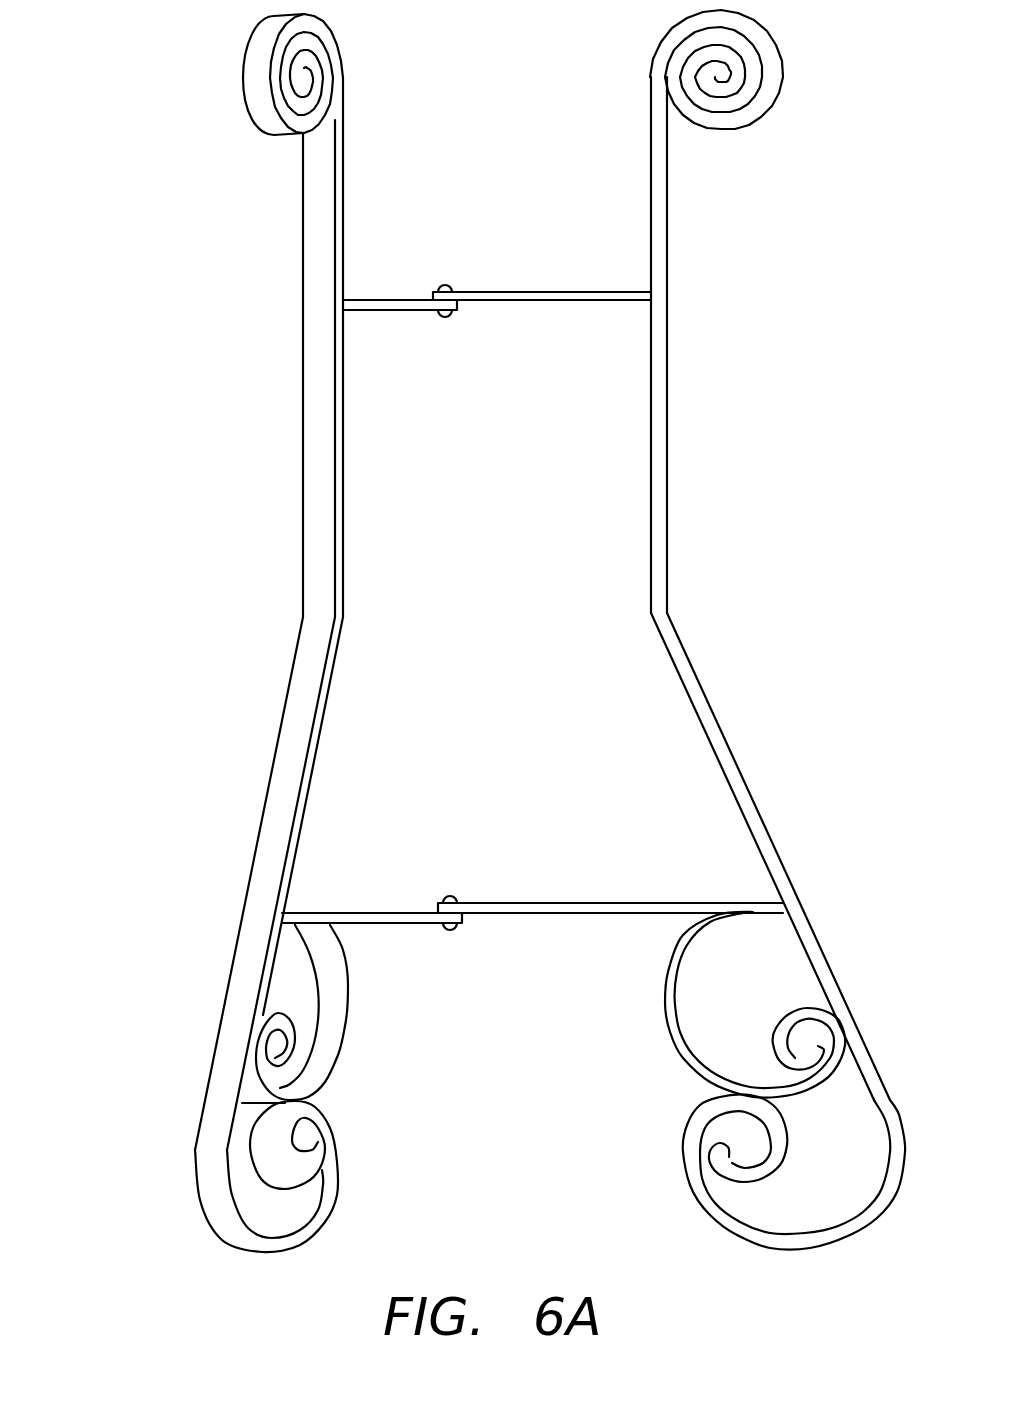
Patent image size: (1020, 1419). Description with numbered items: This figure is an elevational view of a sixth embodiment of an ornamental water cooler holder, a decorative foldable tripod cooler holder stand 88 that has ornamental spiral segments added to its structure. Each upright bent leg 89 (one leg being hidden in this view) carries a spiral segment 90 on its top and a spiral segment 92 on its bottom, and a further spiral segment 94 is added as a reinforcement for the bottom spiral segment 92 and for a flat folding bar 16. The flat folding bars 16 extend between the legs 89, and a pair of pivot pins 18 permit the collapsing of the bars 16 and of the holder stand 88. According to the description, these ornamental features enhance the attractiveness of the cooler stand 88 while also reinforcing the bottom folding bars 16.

The decorative foldable tripod cooler holder stand 88 is at (247, 248).
The upright bent leg 89 is at (317, 483).
The spiral segment 90 is at (322, 88).
The spiral segment 92 is at (335, 1193).
The spiral segment 94 is at (345, 1032).
The flat folding bar 16 is at (377, 312).
The pivot pin 18 is at (443, 286).